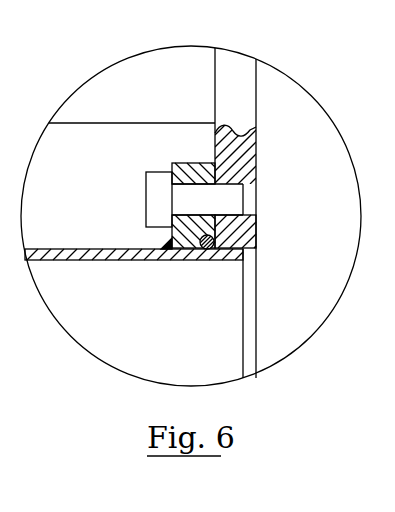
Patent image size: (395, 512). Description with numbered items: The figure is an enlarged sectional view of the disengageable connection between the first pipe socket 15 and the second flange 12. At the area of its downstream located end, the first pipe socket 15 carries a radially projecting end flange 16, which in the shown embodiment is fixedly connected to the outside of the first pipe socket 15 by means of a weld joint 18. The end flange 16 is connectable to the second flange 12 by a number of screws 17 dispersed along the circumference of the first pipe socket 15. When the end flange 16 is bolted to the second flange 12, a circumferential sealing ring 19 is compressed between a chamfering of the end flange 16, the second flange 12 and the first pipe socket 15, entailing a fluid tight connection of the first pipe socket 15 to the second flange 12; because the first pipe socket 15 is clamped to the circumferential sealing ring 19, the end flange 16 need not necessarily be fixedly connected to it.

The second flange 12 is at (236, 68).
The first pipe socket 15 is at (215, 325).
The end flange 16 is at (185, 164).
The screw 17 is at (237, 204).
The weld joint 18 is at (166, 246).
The circumferential sealing ring 19 is at (207, 250).